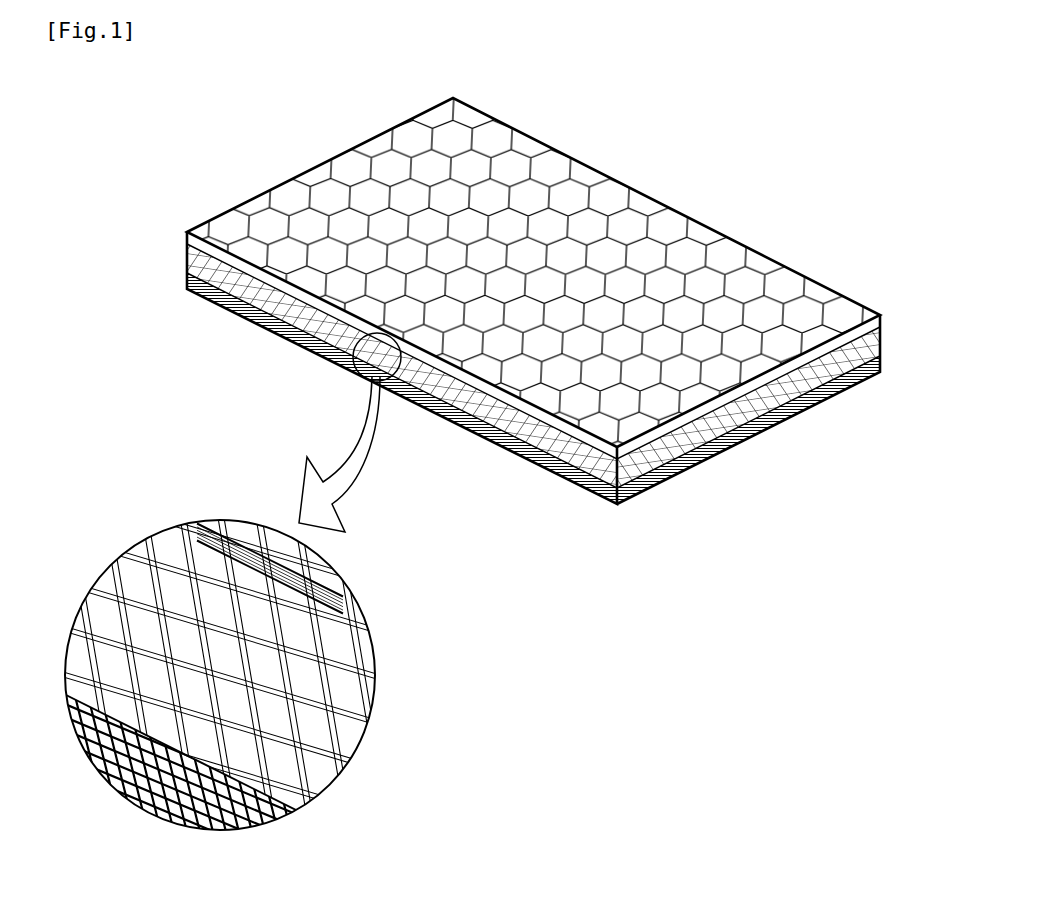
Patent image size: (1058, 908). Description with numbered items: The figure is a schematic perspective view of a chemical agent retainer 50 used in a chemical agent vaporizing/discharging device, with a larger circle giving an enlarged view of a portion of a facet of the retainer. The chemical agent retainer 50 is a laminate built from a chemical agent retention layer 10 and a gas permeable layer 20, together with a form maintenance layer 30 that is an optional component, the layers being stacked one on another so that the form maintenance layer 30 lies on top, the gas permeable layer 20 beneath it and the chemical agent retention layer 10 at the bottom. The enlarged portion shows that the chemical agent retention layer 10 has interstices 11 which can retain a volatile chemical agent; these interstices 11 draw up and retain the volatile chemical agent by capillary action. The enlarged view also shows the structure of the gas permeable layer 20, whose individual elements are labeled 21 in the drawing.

The base layer 10 is at (494, 590).
The base layer fiber 11 is at (168, 820).
The mesh reinforcing layer 20 is at (487, 572).
The reinforcing fiber 21 is at (306, 725).
The surface layer 30 is at (875, 319).
The laminated sheet 50 is at (487, 503).